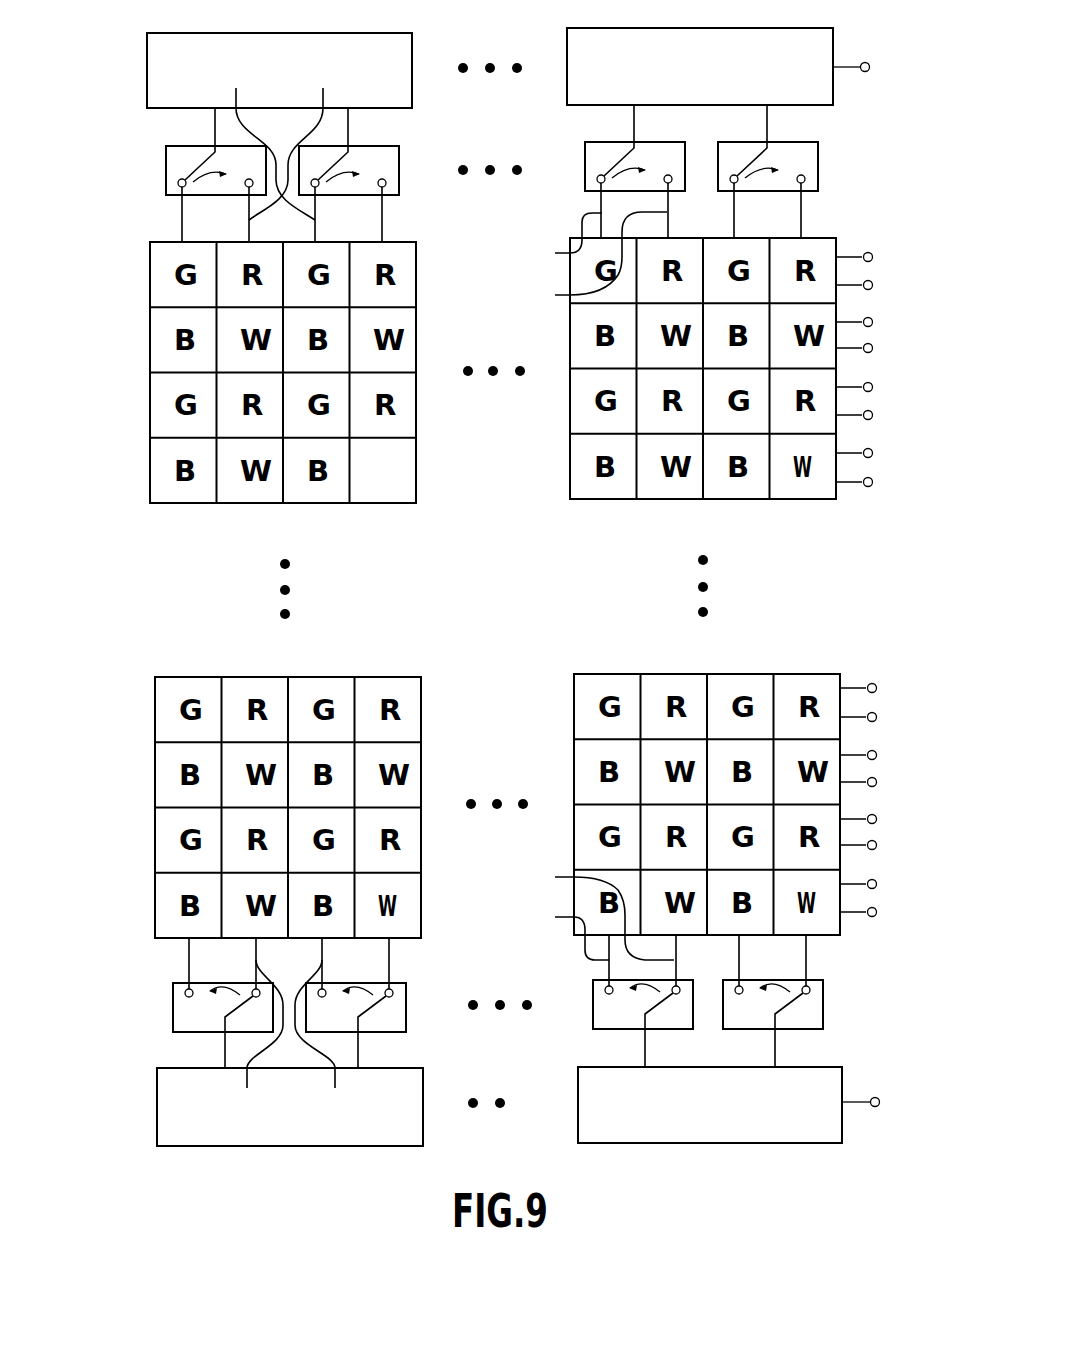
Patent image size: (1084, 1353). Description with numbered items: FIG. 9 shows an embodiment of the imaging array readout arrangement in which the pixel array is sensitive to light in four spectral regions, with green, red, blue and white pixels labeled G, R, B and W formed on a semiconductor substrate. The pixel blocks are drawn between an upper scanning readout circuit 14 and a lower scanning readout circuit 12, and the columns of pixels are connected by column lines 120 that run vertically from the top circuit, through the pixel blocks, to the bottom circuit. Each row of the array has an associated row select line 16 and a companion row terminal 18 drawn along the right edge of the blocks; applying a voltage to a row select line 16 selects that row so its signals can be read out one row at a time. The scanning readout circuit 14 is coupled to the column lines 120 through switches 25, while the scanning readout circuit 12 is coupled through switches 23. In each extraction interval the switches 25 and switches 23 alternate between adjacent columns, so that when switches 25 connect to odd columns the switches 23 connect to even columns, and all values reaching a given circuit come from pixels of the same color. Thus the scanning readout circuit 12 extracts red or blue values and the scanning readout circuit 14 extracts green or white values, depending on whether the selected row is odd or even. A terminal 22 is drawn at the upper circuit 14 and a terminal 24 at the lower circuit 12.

The scanning readout circuit 12 is at (842, 1080).
The scanning readout circuit 14 is at (833, 42).
The row select line 16 is at (890, 602).
The row electrode terminals 18 is at (890, 574).
The input terminal of top block 22 is at (870, 67).
The switches 23 is at (173, 1008).
The input terminal of bottom block 24 is at (879, 1103).
The switches 25 is at (166, 170).
The column lines 120 is at (182, 217).